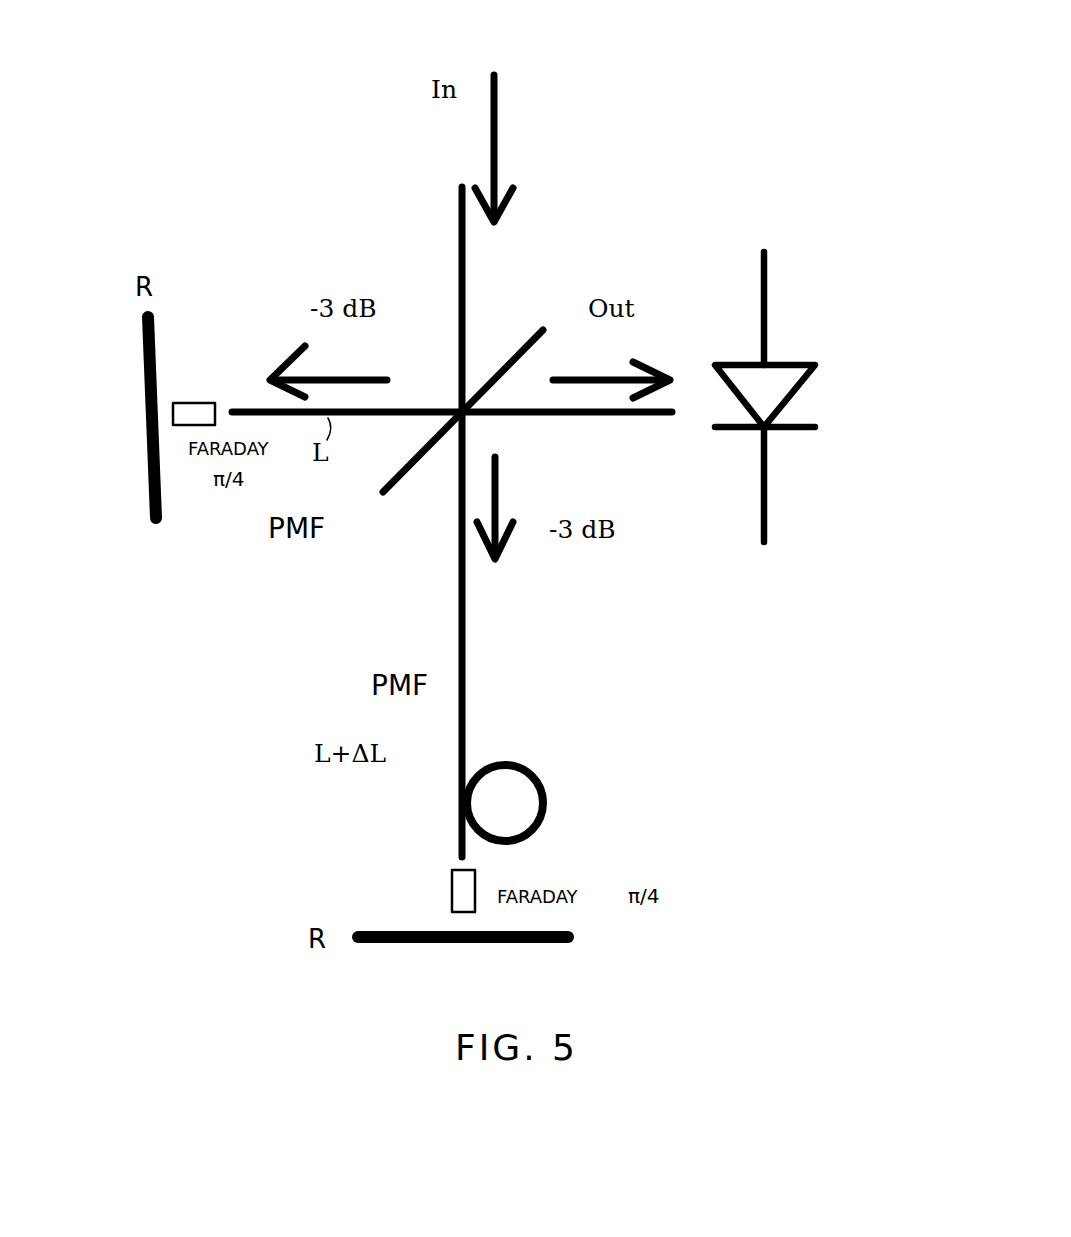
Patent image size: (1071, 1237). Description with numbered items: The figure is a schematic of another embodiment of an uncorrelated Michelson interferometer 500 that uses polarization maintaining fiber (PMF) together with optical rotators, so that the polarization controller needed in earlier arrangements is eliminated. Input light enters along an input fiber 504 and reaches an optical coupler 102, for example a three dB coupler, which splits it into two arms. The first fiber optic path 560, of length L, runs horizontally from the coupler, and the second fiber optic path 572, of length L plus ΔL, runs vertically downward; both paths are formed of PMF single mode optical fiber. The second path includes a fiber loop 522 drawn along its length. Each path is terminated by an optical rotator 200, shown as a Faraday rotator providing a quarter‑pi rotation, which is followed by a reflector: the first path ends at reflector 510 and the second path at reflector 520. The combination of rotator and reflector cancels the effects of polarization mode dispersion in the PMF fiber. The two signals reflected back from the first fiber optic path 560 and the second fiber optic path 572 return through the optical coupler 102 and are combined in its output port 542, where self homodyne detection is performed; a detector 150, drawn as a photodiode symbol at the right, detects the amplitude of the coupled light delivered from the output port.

The uncorrelated Michelson interferometer 500 is at (818, 56).
The input optical fiber 504 is at (467, 288).
The optical coupler 102 is at (521, 343).
The detector 150 is at (835, 392).
The optical rotator 200 is at (196, 403).
The reflector 510 is at (146, 428).
The reflector 520 is at (511, 943).
The fiber loop 522 is at (548, 800).
The output port 542 is at (563, 417).
The first fiber optic path 560 is at (372, 416).
The second fiber optic path 572 is at (468, 652).